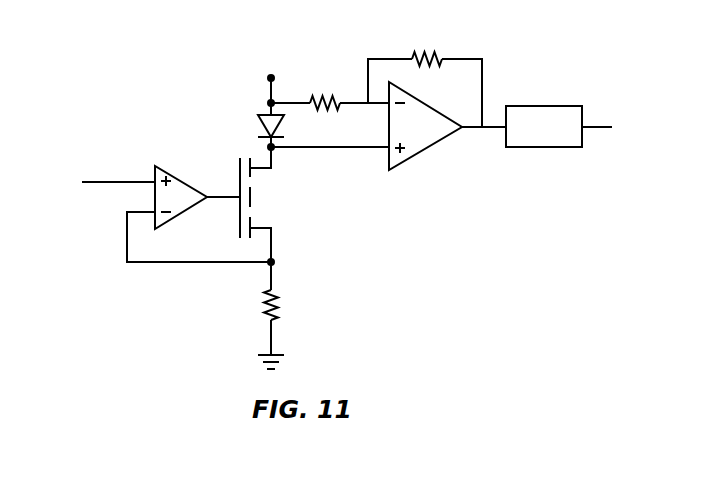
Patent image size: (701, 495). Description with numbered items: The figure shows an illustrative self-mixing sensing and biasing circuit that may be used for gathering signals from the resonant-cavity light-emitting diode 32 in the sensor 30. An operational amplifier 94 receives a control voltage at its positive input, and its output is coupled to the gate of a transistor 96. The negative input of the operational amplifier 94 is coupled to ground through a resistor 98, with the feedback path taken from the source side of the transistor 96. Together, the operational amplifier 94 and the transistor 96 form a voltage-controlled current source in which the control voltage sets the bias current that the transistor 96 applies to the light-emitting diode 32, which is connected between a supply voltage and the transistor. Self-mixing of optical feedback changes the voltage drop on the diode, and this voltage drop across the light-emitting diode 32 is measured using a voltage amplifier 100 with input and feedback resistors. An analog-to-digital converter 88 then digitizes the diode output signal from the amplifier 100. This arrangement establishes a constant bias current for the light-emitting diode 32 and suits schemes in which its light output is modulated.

The sensor 30 is at (107, 92).
The resonant-cavity light-emitting diode 32 is at (258, 122).
The analog-to-digital converter 88 is at (544, 106).
The operational amplifier 94 is at (176, 172).
The transistor 96 is at (278, 200).
The resistor 98 is at (293, 305).
The voltage amplifier 100 is at (425, 149).